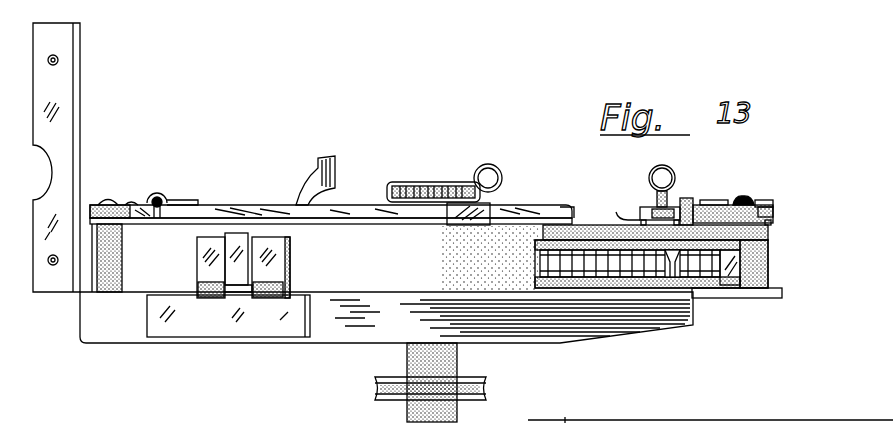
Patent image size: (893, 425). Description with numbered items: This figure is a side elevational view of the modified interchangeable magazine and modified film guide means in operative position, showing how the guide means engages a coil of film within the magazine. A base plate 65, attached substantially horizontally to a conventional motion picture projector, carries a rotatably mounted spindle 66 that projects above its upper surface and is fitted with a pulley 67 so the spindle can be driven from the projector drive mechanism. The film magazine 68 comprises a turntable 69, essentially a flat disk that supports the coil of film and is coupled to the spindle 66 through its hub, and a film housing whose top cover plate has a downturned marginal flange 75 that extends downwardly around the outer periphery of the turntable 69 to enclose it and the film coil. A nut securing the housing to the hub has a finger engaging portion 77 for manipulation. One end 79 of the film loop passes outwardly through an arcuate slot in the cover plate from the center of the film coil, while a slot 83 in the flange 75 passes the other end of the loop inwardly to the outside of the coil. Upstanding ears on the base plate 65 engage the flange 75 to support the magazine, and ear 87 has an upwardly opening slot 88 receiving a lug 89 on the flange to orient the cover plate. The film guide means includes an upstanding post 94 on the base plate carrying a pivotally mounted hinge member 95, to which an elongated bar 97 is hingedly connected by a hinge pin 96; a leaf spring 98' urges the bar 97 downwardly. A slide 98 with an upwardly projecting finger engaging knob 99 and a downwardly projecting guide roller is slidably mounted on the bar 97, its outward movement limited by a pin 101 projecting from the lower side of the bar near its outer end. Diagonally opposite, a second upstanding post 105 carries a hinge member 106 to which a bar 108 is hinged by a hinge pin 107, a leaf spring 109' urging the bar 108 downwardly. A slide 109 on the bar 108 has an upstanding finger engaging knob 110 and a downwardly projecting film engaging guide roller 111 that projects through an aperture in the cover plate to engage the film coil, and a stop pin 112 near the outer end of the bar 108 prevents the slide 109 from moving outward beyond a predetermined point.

The base plate 65 is at (783, 304).
The spindle 66 is at (458, 366).
The pulley 67 is at (490, 395).
The film magazine 68 is at (770, 235).
The turntable 69 is at (725, 290).
The downturned marginal flange 75 is at (770, 272).
The finger engaging portion 77 is at (396, 182).
The end of film loop 79 is at (320, 166).
The slot 83 is at (770, 248).
The upstanding ear 87 is at (290, 268).
The upwardly opening slot 88 is at (248, 256).
The lug 89 is at (220, 235).
The upstanding post 94 is at (123, 272).
The hinge member 95 is at (126, 200).
The hinge pin 96 is at (158, 197).
The elongated bar 97 is at (263, 205).
The slide 98 is at (496, 198).
The leaf spring 98' is at (188, 186).
The finger engaging knob 99 is at (500, 170).
The pin 101 is at (588, 213).
The second upstanding post 105 is at (772, 223).
The hinge member 106 is at (773, 210).
The hinge pin 107 is at (762, 200).
The bar 108 is at (708, 200).
The slide 109 is at (700, 185).
The leaf spring 109' is at (758, 179).
The finger engaging knob 110 is at (653, 168).
The film engaging guide roller 111 is at (672, 268).
The stop pin 112 is at (622, 198).